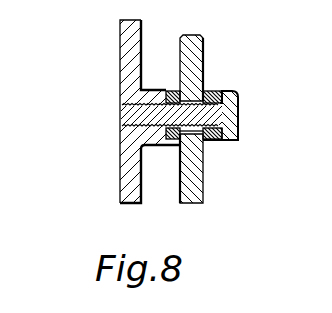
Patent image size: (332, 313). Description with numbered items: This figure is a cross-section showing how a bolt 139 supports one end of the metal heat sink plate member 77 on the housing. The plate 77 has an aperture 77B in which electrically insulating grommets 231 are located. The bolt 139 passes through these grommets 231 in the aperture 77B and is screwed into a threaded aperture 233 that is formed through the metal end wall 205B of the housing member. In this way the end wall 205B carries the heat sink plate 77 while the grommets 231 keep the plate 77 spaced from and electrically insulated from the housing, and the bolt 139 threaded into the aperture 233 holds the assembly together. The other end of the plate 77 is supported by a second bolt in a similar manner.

The end wall 205B is at (120, 68).
The threaded aperture 233 is at (134, 125).
The bolt 139 is at (278, 78).
The electrically insulating grommets 231 is at (170, 91).
The heat sink plate member 77 is at (203, 62).
The aperture 77B is at (204, 170).